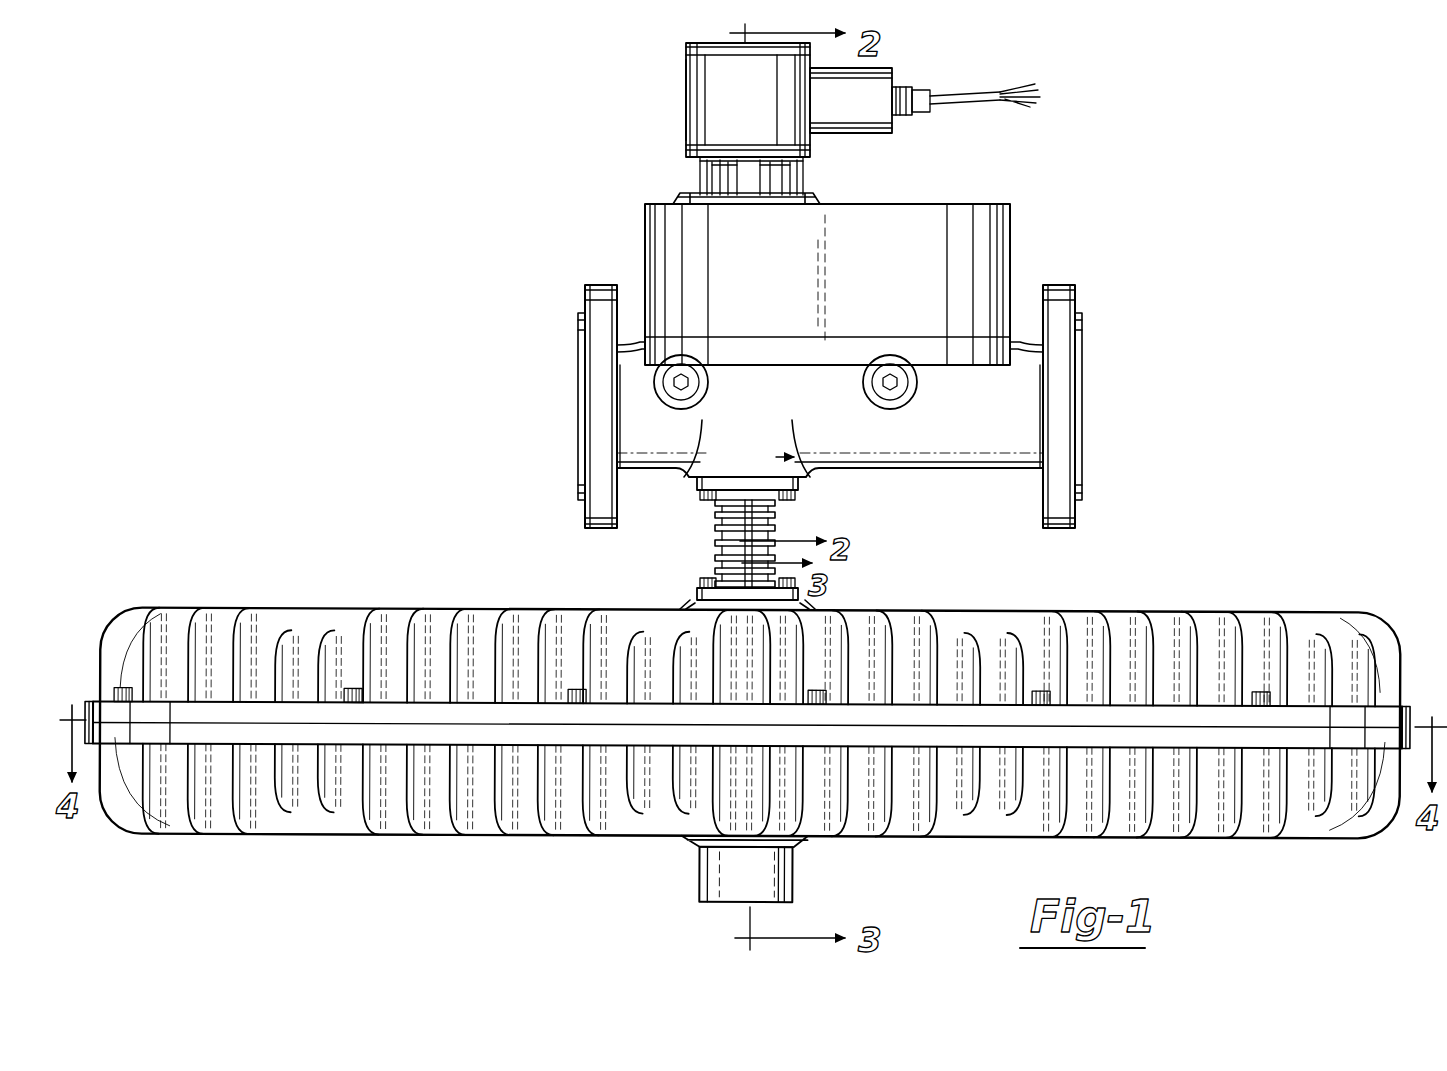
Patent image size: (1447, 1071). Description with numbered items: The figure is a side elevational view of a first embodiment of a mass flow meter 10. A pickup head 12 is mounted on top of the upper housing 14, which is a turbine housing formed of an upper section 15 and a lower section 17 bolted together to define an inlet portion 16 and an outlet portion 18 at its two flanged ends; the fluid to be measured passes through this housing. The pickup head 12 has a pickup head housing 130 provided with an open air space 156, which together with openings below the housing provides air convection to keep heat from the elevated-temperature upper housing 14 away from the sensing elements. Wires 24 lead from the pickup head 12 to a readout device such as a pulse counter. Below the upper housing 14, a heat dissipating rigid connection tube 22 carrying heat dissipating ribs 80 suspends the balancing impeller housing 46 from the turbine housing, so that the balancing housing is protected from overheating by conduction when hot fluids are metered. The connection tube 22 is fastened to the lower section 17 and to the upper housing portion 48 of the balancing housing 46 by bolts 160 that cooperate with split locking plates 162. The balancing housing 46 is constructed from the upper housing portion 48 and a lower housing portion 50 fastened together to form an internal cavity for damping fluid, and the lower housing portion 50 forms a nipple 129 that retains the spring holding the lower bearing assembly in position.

The mass flow meter 10 is at (1190, 428).
The pickup head 12 is at (684, 71).
The upper housing 14 is at (1022, 222).
The upper section 15 is at (1012, 268).
The inlet portion 16 is at (578, 428).
The lower section 17 is at (973, 473).
The outlet portion 18 is at (1081, 462).
The connection tube 22 is at (786, 527).
The wires 24 is at (974, 102).
The balancing impeller housing 46 is at (352, 565).
The upper housing portion 48 is at (262, 568).
The lower housing portion 50 is at (355, 836).
The heat dissipating ribs 80 is at (717, 553).
The nipple 129 is at (794, 881).
The pickup head housing 130 is at (688, 118).
The open air space 156 is at (706, 184).
The bolts 160 is at (700, 580).
The split locking plates 162 is at (800, 486).